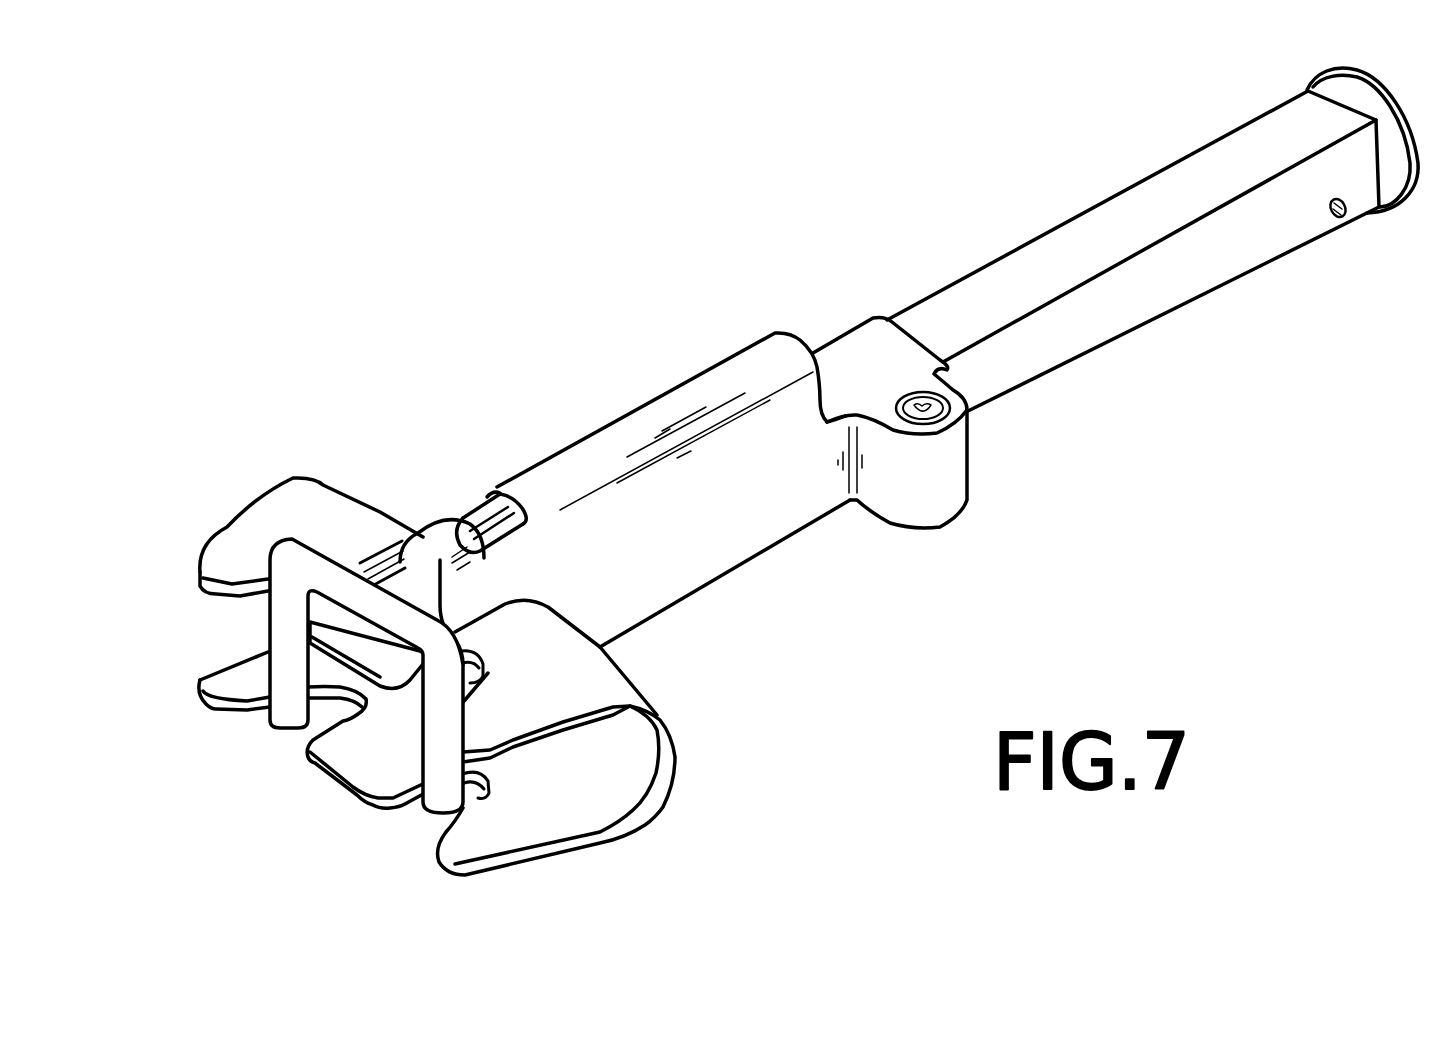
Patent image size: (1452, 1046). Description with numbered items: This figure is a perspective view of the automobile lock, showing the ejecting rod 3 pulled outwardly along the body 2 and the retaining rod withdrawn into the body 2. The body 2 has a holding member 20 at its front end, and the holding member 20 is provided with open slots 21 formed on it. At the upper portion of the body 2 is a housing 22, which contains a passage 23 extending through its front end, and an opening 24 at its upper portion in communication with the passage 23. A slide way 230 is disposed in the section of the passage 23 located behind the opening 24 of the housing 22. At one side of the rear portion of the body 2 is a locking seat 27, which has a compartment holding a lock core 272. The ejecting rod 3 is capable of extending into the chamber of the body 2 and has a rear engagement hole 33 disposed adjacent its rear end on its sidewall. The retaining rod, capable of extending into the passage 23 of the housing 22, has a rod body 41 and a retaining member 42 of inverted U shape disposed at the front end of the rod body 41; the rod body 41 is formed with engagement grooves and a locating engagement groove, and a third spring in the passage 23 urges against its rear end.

The body 2 is at (730, 570).
The ejecting rod 3 is at (1193, 288).
The holding member 20 is at (667, 750).
The open slots 21 is at (470, 681).
The housing 22 is at (575, 460).
The passage 23 is at (417, 525).
The opening 24 is at (470, 507).
The locking seat 27 is at (948, 505).
The rear engagement hole 33 is at (1342, 218).
The rod body 41 is at (387, 570).
The retaining member 42 is at (280, 643).
The slide way 230 is at (497, 490).
The lock core 272 is at (950, 403).